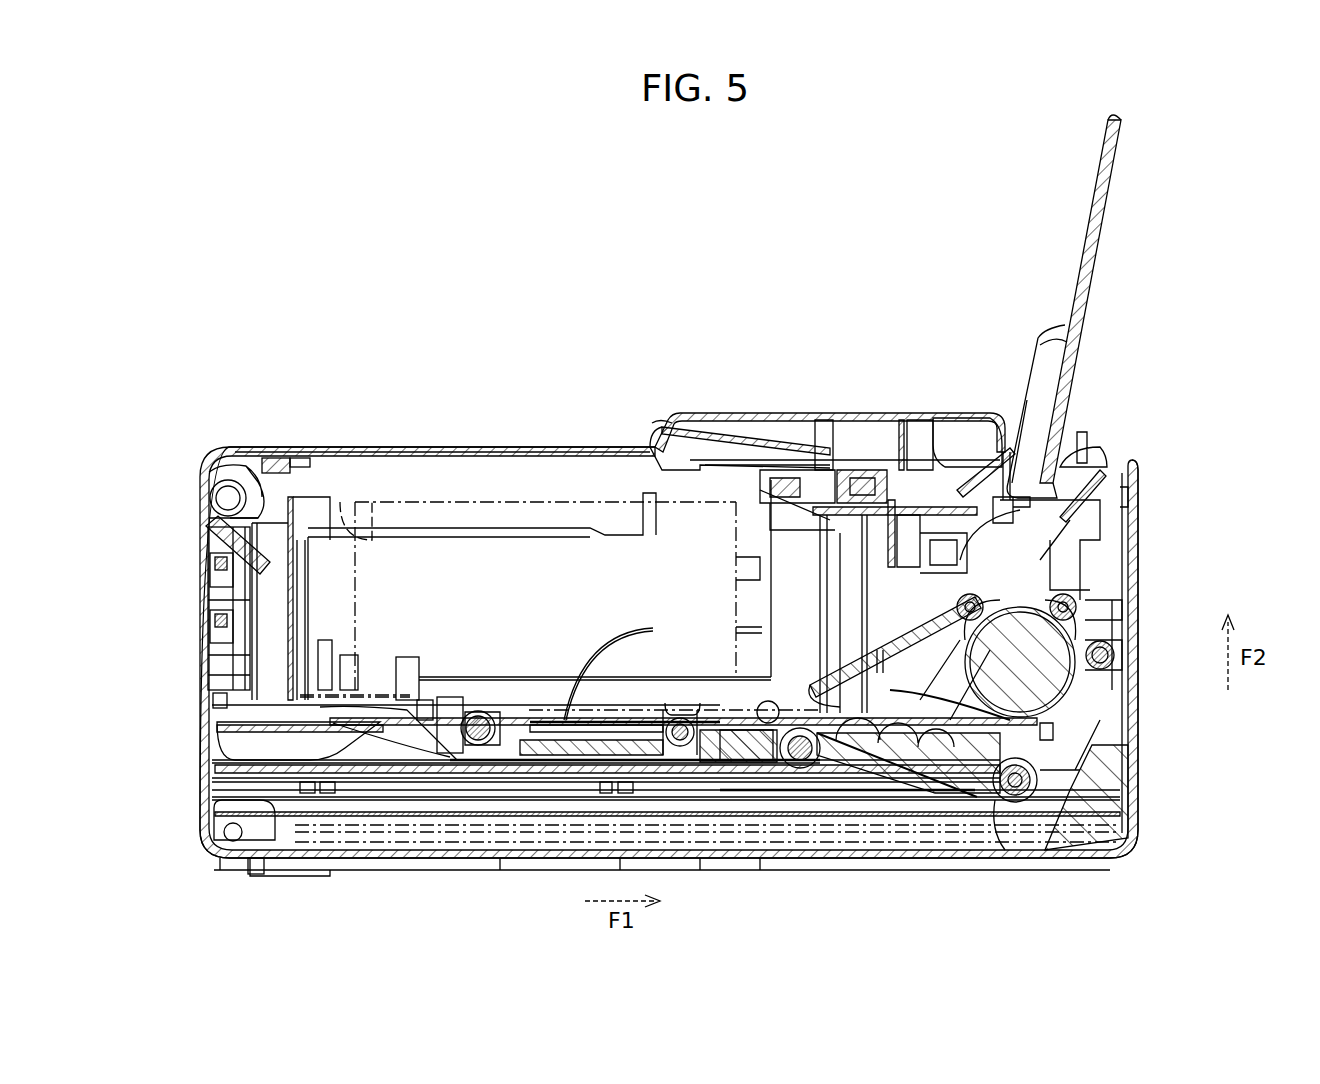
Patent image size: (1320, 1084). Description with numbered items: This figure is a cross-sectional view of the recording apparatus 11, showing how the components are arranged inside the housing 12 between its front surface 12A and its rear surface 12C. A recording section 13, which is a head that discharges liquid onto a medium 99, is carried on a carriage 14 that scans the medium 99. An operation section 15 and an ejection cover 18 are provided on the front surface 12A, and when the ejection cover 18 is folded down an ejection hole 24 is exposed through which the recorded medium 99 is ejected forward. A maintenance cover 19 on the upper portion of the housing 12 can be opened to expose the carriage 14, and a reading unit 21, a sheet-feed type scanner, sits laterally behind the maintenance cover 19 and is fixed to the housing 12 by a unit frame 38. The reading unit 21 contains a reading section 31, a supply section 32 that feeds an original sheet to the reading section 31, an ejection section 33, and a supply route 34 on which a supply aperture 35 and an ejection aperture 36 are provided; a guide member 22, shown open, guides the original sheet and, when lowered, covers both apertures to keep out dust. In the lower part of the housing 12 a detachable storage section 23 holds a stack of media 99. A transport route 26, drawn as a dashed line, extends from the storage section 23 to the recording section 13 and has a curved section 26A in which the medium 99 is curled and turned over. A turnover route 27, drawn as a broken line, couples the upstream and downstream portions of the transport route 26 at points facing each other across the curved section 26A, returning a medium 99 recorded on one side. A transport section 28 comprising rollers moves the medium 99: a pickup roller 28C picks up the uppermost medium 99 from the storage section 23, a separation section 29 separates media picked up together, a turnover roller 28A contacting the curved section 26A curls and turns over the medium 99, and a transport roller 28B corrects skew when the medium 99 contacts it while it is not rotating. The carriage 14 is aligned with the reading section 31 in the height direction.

The recording apparatus 11 is at (210, 403).
The housing 12 is at (1140, 480).
The front surface 12A is at (205, 490).
The rear surface 12C is at (1140, 528).
The recording section 13 is at (679, 683).
The carriage 14 is at (455, 495).
The operation section 15 is at (205, 593).
The ejection cover 18 is at (205, 752).
The maintenance cover 19 is at (437, 447).
The reading unit 21 is at (662, 356).
The guide member 22 is at (1120, 192).
The storage section 23 is at (215, 860).
The ejection hole 24 is at (212, 698).
The transport route 26 is at (1140, 718).
The curved section 26A is at (1130, 608).
The turnover route 27 is at (900, 697).
The transport section 28 is at (1110, 593).
The turnover roller 28A is at (1128, 641).
The transport roller 28B is at (682, 746).
The pickup roller 28C is at (1012, 803).
The separation section 29 is at (1098, 775).
The reading section 31 is at (879, 527).
The supply section 32 is at (783, 483).
The ejection section 33 is at (912, 447).
The supply route 34 is at (873, 447).
The supply aperture 35 is at (774, 447).
The ejection aperture 36 is at (953, 447).
The unit frame 38 is at (897, 550).
The medium 99 is at (257, 862).